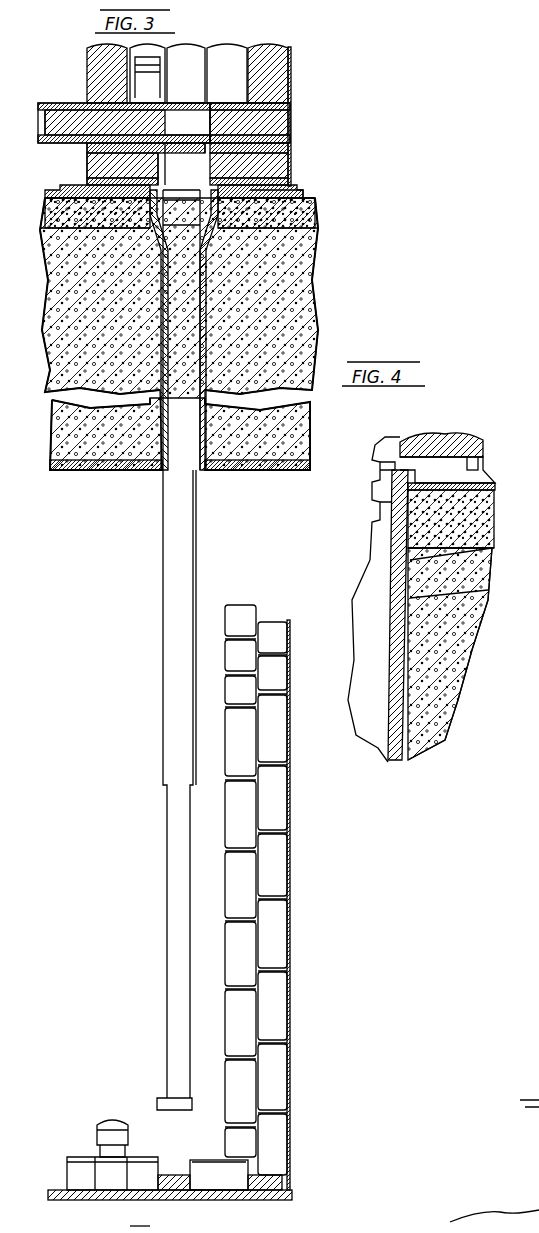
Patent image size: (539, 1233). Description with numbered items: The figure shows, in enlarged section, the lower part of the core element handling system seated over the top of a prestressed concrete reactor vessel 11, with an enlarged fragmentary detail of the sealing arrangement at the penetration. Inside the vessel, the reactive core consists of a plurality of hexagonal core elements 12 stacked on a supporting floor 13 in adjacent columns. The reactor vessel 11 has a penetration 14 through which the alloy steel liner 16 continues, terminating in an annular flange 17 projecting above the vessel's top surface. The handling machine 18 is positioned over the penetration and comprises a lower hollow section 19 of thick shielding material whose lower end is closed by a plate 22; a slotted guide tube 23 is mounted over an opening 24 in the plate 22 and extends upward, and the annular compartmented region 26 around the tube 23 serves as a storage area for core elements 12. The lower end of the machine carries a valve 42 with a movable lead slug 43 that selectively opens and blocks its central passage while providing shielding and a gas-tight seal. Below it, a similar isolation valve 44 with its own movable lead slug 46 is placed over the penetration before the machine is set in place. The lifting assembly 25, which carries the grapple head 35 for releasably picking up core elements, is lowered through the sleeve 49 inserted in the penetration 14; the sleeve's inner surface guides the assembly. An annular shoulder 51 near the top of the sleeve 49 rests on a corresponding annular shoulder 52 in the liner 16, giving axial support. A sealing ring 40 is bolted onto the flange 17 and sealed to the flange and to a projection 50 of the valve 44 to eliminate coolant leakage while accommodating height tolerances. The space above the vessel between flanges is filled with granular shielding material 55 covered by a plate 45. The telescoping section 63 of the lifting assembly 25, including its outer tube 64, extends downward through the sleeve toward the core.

In FIG. 3, the reactor vessel 11 is at (316, 312).
In FIG. 3, the core elements 12 is at (140, 72).
In FIG. 3, the supporting floor 13 is at (288, 1192).
In FIG. 3, the penetration 14 is at (195, 300).
In FIG. 4, the penetration 14 is at (382, 604).
In FIG. 3, the alloy steel liner 16 is at (207, 472).
In FIG. 3, the annular flange 17 is at (198, 232).
In FIG. 4, the annular flange 17 is at (494, 512).
In FIG. 3, the handling machine 18 is at (308, 102).
In FIG. 3, the lower hollow section 19 is at (290, 75).
In FIG. 3, the plate 22 is at (270, 104).
In FIG. 3, the slotted guide tube 23 is at (215, 68).
In FIG. 3, the opening 24 is at (186, 102).
In FIG. 3, the lifting assembly 25 is at (148, 605).
In FIG. 3, the annular compartmented region 26 is at (260, 62).
In FIG. 3, the grapple head 35 is at (100, 1128).
In FIG. 3, the sealing ring 40 is at (165, 186).
In FIG. 4, the sealing ring 40 is at (440, 462).
In FIG. 3, the valve 42 is at (275, 128).
In FIG. 3, the movable lead slug 43 is at (48, 143).
In FIG. 3, the valve 44 is at (270, 172).
In FIG. 4, the valve 44 is at (445, 436).
In FIG. 3, the plate 45 is at (318, 205).
In FIG. 3, the movable lead slug 46 is at (100, 165).
In FIG. 3, the guide sleeve 49 is at (165, 472).
In FIG. 4, the guide sleeve 49 is at (392, 640).
In FIG. 3, the projection 50 is at (300, 186).
In FIG. 4, the projection 50 is at (483, 470).
In FIG. 4, the annular shoulder 51 is at (490, 562).
In FIG. 4, the annular shoulder 52 is at (450, 592).
In FIG. 3, the granular shielding material 55 is at (318, 228).
In FIG. 4, the granular shielding material 55 is at (494, 540).
In FIG. 3, the telescoping section 63 is at (165, 788).
In FIG. 3, the outer tube 64 is at (214, 608).